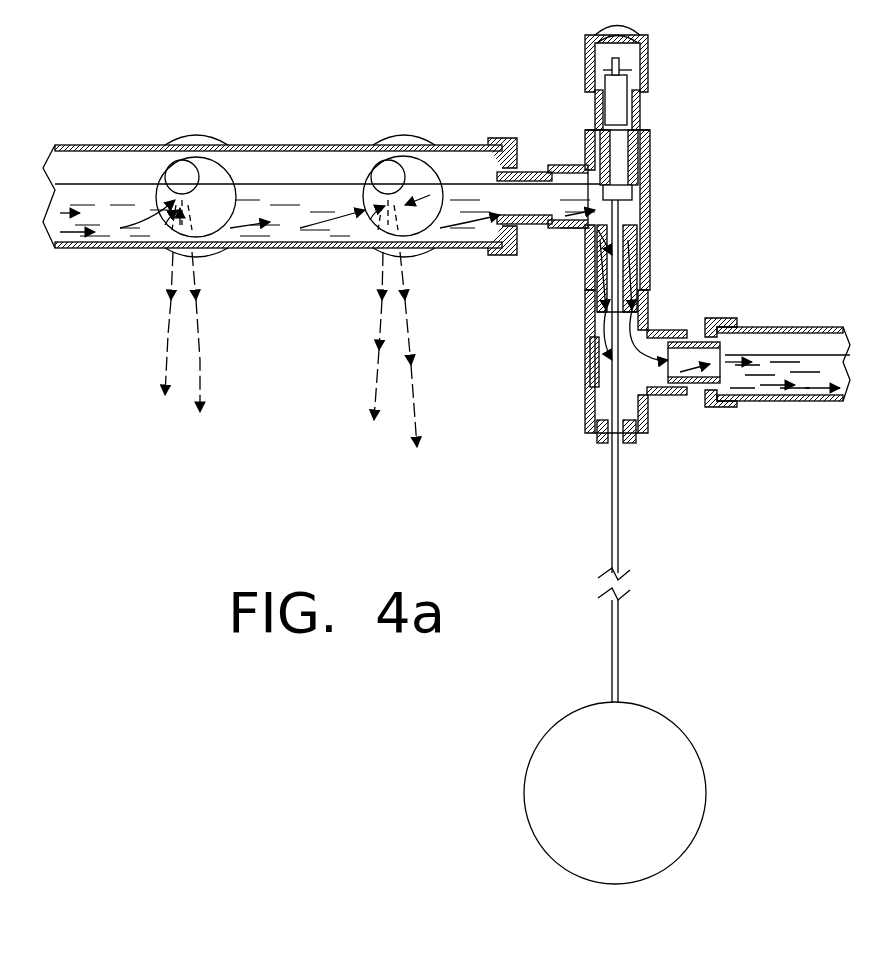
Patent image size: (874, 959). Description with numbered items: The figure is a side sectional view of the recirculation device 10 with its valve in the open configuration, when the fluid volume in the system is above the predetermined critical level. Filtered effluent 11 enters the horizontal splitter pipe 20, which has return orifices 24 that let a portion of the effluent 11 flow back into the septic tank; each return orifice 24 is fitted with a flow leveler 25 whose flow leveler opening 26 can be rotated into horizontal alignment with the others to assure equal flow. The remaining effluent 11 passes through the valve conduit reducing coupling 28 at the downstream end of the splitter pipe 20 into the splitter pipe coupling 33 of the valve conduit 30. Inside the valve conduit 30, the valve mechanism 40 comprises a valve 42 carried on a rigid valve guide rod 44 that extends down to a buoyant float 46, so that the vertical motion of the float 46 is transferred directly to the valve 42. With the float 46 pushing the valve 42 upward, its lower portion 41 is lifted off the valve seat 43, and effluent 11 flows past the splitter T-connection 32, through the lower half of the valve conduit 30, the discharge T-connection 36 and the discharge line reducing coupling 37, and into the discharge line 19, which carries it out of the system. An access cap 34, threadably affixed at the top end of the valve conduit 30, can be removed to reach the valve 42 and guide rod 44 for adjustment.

The recirculation device 10 is at (275, 118).
The effluent 11 is at (473, 250).
The discharge line 19 is at (800, 345).
The splitter pipe 20 is at (68, 145).
The return orifices 24 is at (232, 250).
The flow levelers 25 is at (197, 136).
The flow leveler opening 26 is at (178, 173).
The valve conduit reducing coupling 28 is at (518, 168).
The valve conduit 30 is at (655, 262).
The splitter T-connection 32 is at (650, 195).
The splitter pipe coupling 33 is at (578, 165).
The access cap 34 is at (642, 30).
The discharge T-connection 36 is at (650, 325).
The discharge line reducing coupling 37 is at (698, 388).
The valve mechanism 40 is at (582, 460).
The lower portion of valve 41 is at (628, 207).
The valve 42 is at (622, 118).
The valve seat 43 is at (650, 238).
The valve guide rod 44 is at (620, 512).
The float 46 is at (690, 792).